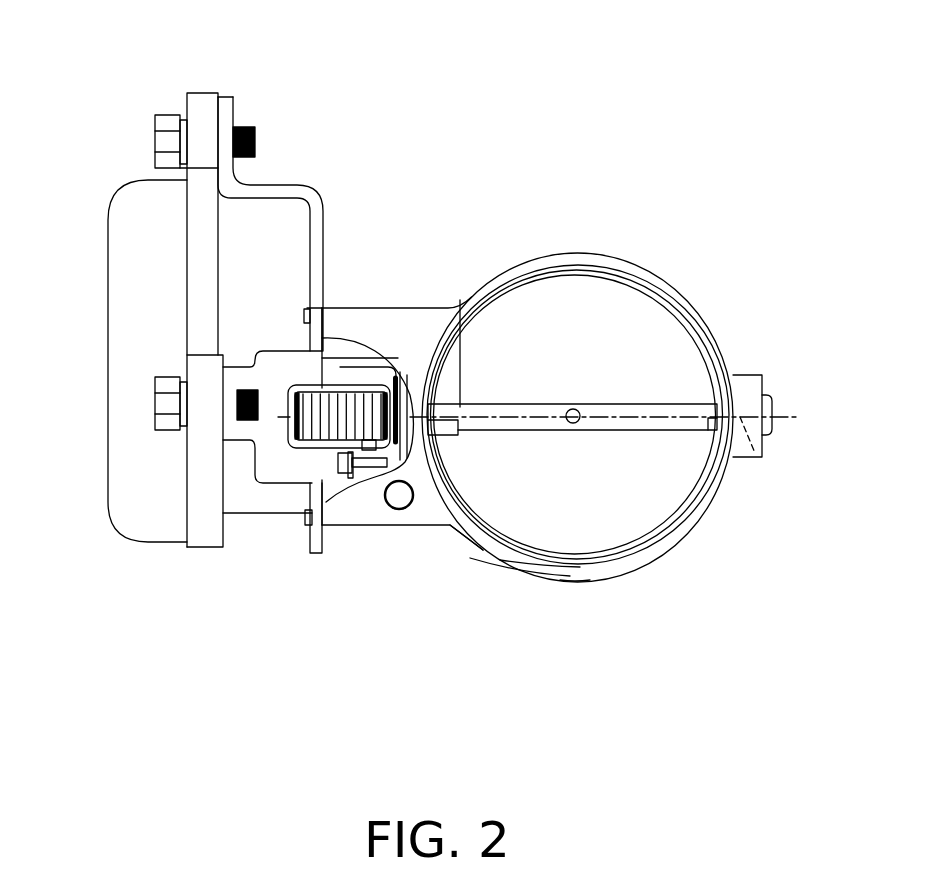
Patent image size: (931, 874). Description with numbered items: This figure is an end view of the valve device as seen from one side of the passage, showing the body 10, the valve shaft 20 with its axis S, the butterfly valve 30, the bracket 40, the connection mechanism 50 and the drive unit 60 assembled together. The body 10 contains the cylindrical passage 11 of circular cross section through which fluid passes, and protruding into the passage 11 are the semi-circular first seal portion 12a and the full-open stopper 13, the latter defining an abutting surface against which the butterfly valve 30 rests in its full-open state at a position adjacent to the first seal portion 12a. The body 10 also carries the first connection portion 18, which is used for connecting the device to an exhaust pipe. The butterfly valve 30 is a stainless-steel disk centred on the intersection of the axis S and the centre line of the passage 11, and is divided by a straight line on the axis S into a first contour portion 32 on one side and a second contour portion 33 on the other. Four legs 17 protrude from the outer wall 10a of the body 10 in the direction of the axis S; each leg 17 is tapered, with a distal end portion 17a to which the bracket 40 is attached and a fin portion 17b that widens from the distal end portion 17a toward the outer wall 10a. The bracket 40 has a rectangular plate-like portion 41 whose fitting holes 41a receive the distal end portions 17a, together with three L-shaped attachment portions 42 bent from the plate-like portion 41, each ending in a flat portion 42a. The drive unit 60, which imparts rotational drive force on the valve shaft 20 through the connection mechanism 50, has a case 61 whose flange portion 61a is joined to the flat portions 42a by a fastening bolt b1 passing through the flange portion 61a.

The body 10 is at (628, 258).
The outer wall 10a is at (476, 550).
The passage 11 is at (517, 285).
The first seal portion 12a is at (573, 562).
The full-open stopper 13 is at (460, 407).
The leg 17 is at (370, 317).
The distal end portion 17a is at (325, 312).
The fin portion 17b is at (403, 353).
The first connection portion 18 is at (622, 492).
The valve shaft 20 is at (657, 440).
The butterfly valve 30 is at (640, 546).
The first contour portion 32 is at (541, 568).
The second contour portion 33 is at (573, 288).
The bracket 40 is at (310, 553).
The plate-like portion 41 is at (318, 218).
The fitting hole 41a is at (306, 310).
The attachment portion 42 is at (268, 185).
The flat portion 42a is at (230, 105).
The connection mechanism 50 is at (329, 451).
The drive unit 60 is at (122, 528).
The case 61 is at (170, 533).
The flange portion 61a is at (201, 112).
The fastening bolt b1 is at (153, 143).
The axis S is at (757, 458).